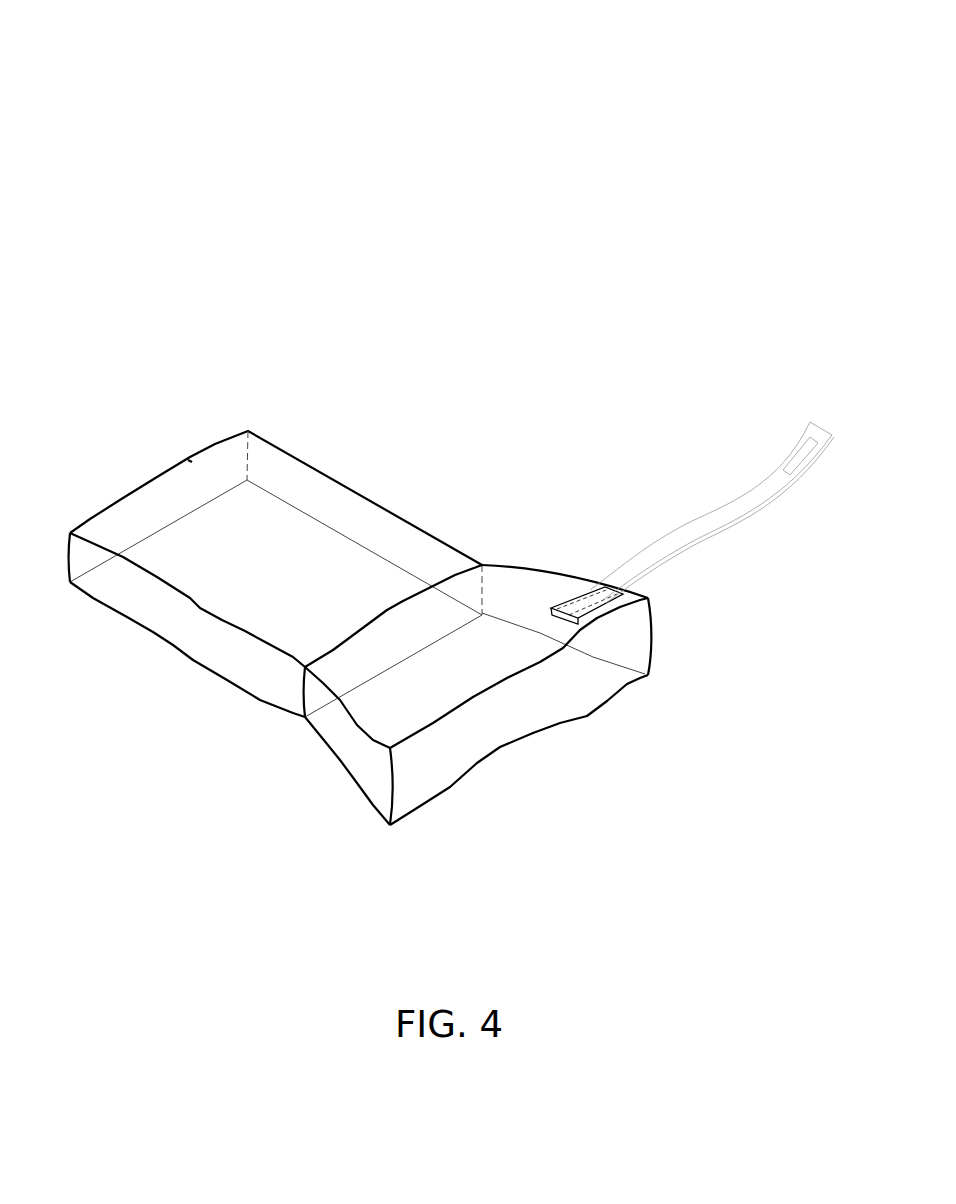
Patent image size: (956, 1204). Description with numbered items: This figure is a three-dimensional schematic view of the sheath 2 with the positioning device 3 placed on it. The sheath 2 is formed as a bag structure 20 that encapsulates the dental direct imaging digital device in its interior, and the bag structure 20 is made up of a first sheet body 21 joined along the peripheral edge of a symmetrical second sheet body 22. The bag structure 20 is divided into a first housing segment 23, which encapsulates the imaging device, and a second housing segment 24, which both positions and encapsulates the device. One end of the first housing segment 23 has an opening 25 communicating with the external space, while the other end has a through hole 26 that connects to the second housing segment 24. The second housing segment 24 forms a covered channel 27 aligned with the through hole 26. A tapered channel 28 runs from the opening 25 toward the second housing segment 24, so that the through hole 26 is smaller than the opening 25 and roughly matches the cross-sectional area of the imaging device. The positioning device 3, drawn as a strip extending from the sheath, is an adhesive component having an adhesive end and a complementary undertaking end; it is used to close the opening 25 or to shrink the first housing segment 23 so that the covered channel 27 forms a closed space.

The sheath 2 is at (470, 74).
The positioning device 3 is at (727, 515).
The bag structure 20 is at (256, 232).
The first sheet body 21 is at (123, 497).
The second sheet body 22 is at (190, 500).
The first housing segment 23 is at (505, 580).
The second housing segment 24 is at (316, 488).
The opening 25 is at (512, 750).
The through hole 26 is at (389, 590).
The covered channel 27 is at (142, 733).
The tapered channel 28 is at (262, 865).